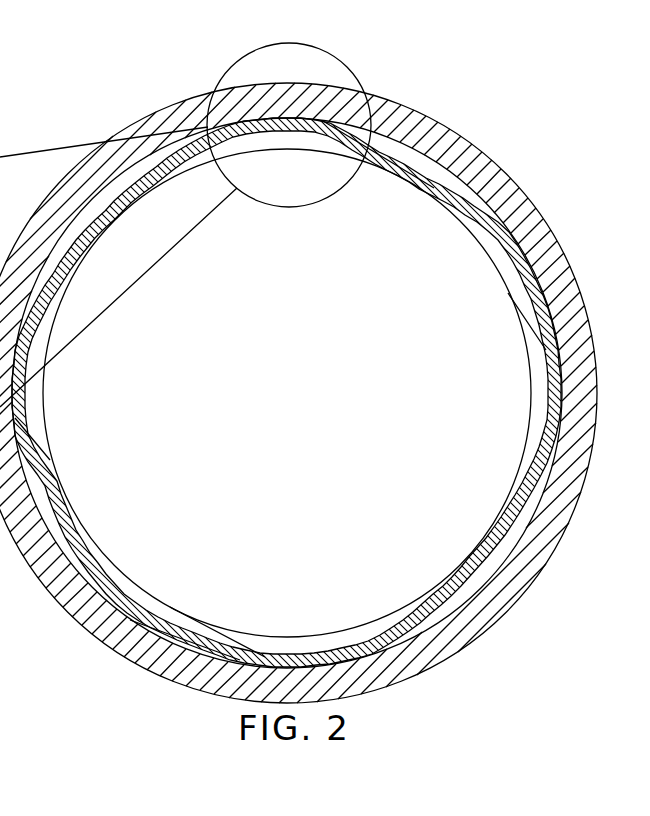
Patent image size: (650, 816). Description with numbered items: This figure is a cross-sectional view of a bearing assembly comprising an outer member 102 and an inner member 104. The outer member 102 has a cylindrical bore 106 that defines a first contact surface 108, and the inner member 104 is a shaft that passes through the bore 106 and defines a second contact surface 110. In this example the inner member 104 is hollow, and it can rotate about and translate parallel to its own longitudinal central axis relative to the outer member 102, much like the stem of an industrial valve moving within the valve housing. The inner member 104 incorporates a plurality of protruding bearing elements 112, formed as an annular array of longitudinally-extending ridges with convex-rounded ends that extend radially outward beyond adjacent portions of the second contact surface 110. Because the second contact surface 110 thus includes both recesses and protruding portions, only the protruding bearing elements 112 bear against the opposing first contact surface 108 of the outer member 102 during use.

The outer member 102 is at (405, 117).
The inner member 104 is at (388, 168).
The bore 106 is at (157, 637).
The first contact surface 108 is at (193, 650).
The second contact surface 110 is at (390, 636).
The bearing elements 112 is at (100, 597).